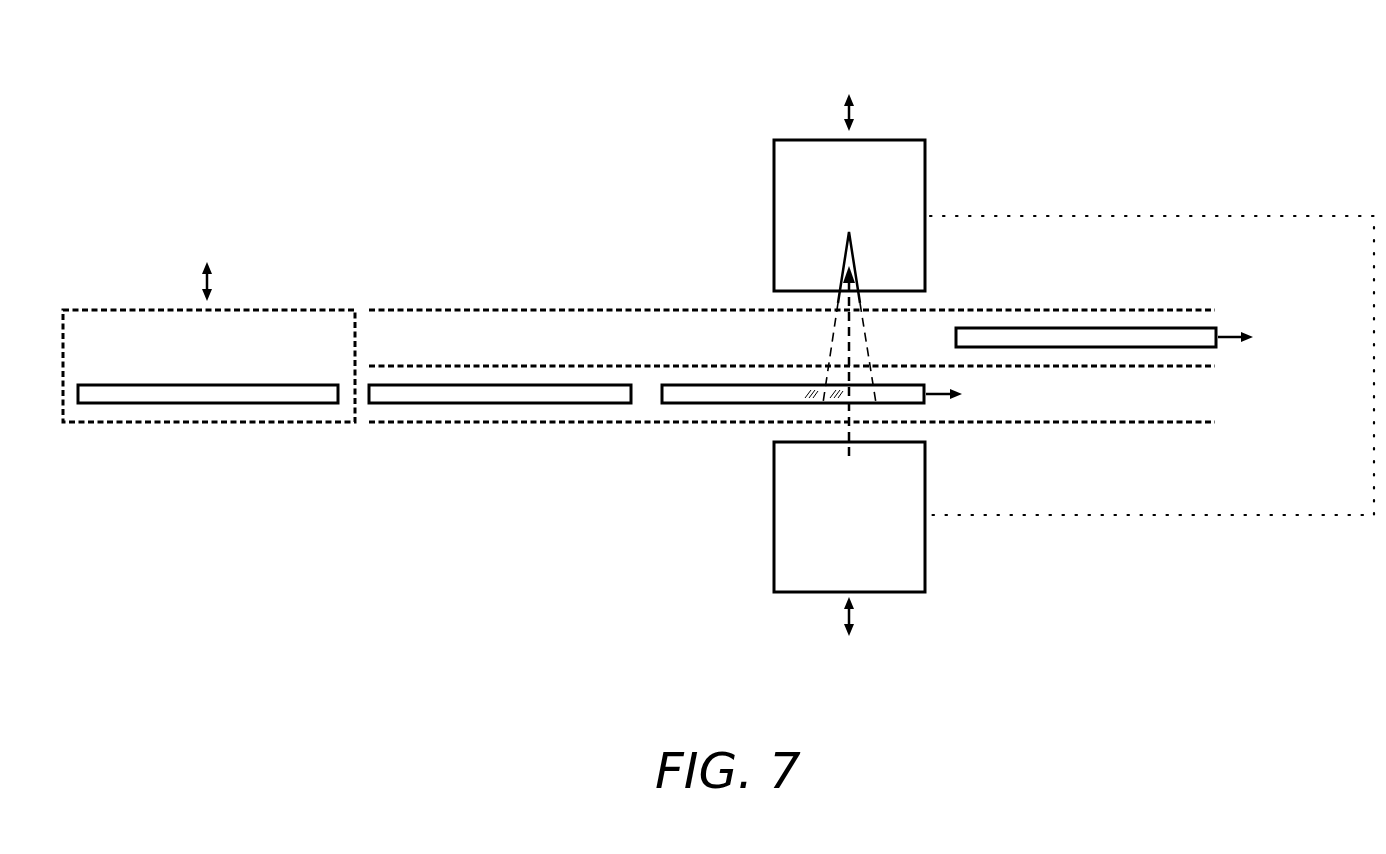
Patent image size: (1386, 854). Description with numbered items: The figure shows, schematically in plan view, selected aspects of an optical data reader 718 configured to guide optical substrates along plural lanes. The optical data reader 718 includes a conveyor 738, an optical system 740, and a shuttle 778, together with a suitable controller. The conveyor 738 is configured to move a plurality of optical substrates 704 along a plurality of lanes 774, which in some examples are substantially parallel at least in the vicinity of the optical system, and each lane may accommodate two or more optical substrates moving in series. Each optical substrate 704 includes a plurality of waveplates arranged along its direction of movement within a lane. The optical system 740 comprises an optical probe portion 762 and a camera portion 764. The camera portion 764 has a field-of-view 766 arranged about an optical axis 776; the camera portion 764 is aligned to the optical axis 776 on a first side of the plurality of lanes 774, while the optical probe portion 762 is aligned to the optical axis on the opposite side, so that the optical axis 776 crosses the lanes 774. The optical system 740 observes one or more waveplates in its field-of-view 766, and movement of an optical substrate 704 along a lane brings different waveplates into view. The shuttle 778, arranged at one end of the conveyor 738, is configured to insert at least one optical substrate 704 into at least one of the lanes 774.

The optical data reader 718 is at (1330, 156).
The optical substrate 704 is at (503, 405).
The conveyor 738 is at (1272, 310).
The optical system 740 is at (1366, 461).
The optical probe portion 762 is at (871, 528).
The camera portion 764 is at (871, 228).
The field-of-view 766 is at (846, 258).
The lanes 774 is at (1121, 407).
The optical axis 776 is at (846, 332).
The shuttle 778 is at (229, 359).